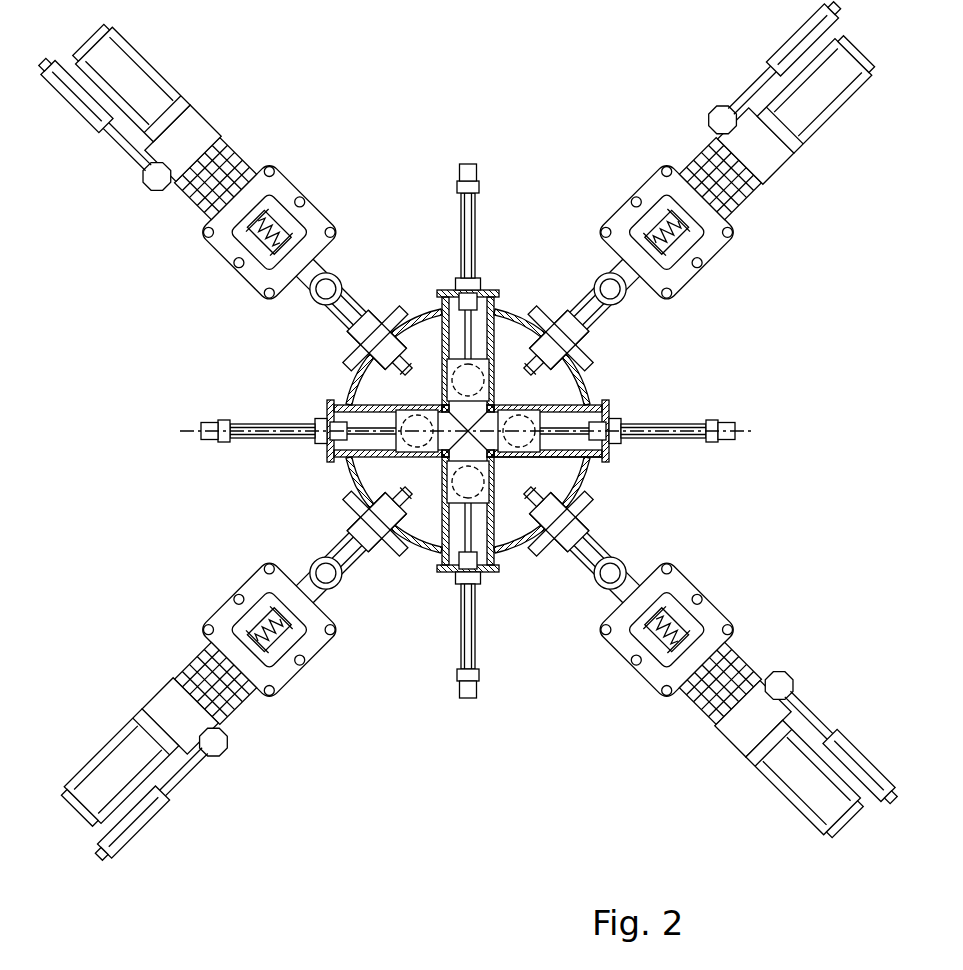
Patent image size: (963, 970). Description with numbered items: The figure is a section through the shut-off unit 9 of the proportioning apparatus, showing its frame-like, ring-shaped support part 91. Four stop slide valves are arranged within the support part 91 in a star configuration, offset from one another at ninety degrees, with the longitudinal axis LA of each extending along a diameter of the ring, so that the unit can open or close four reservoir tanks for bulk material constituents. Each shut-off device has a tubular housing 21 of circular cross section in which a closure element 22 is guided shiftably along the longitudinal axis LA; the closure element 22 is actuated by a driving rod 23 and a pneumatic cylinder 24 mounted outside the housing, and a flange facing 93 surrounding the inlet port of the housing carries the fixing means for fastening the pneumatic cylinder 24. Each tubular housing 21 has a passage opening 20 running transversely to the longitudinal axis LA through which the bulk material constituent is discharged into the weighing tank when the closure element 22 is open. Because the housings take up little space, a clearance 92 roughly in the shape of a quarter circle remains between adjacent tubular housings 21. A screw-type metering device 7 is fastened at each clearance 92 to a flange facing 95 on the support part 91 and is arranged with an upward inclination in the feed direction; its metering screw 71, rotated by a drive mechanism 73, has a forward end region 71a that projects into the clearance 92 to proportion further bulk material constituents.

The shut-off unit 9 is at (494, 414).
The support part 91 is at (422, 307).
The clearance 92 is at (372, 463).
The passage opening 20 is at (513, 420).
The tubular housing 21 is at (550, 402).
The closure element 22 is at (562, 437).
The driving rod 23 is at (592, 463).
The pneumatic cylinder 24 is at (690, 423).
The flange facing 93 is at (610, 405).
The longitudinal axis LA is at (263, 428).
The screw-type metering device 7 is at (263, 649).
The metering screw 71 is at (233, 592).
The forward end region 71a is at (531, 497).
The drive mechanism 73 is at (118, 745).
The flange facing 95 is at (383, 548).